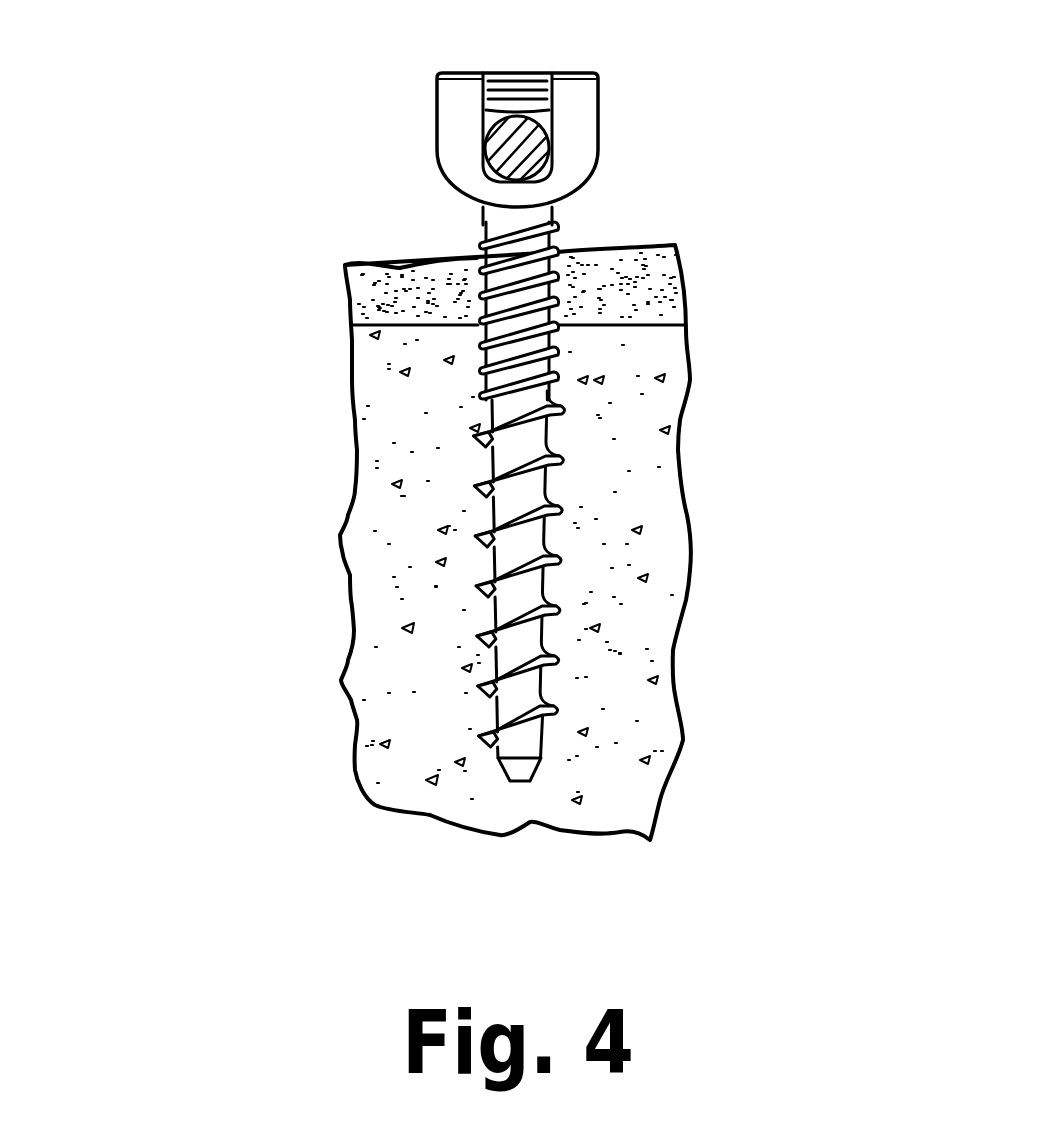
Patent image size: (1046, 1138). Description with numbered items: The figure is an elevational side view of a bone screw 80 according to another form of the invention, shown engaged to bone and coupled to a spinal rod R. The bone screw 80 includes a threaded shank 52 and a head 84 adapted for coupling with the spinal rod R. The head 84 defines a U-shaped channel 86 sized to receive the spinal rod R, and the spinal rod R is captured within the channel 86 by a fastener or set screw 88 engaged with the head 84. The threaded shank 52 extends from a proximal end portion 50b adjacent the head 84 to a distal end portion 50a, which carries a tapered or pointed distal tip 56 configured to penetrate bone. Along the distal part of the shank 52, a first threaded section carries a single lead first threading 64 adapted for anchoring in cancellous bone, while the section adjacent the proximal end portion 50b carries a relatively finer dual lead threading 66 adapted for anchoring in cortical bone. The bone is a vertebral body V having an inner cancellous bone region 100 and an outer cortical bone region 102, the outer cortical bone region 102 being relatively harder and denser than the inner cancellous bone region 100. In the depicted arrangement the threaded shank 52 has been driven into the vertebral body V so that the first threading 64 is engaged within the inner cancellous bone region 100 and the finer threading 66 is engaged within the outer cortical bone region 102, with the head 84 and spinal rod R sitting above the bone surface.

The bone screw 80 is at (464, 445).
The bone screw head 84 is at (460, 114).
The U-shaped channel 86 is at (560, 145).
The set screw 88 is at (515, 72).
The spinal rod R is at (470, 168).
The proximal end portion 50b is at (416, 251).
The distal end portion 50a is at (566, 763).
The threaded shank 52 is at (496, 526).
The distal tip 56 is at (500, 775).
The first threading 64 is at (478, 338).
The finer threading 66 is at (560, 286).
The inner cancellous bone region 100 is at (656, 518).
The outer cortical bone region 102 is at (680, 280).
The vertebral body V is at (318, 460).